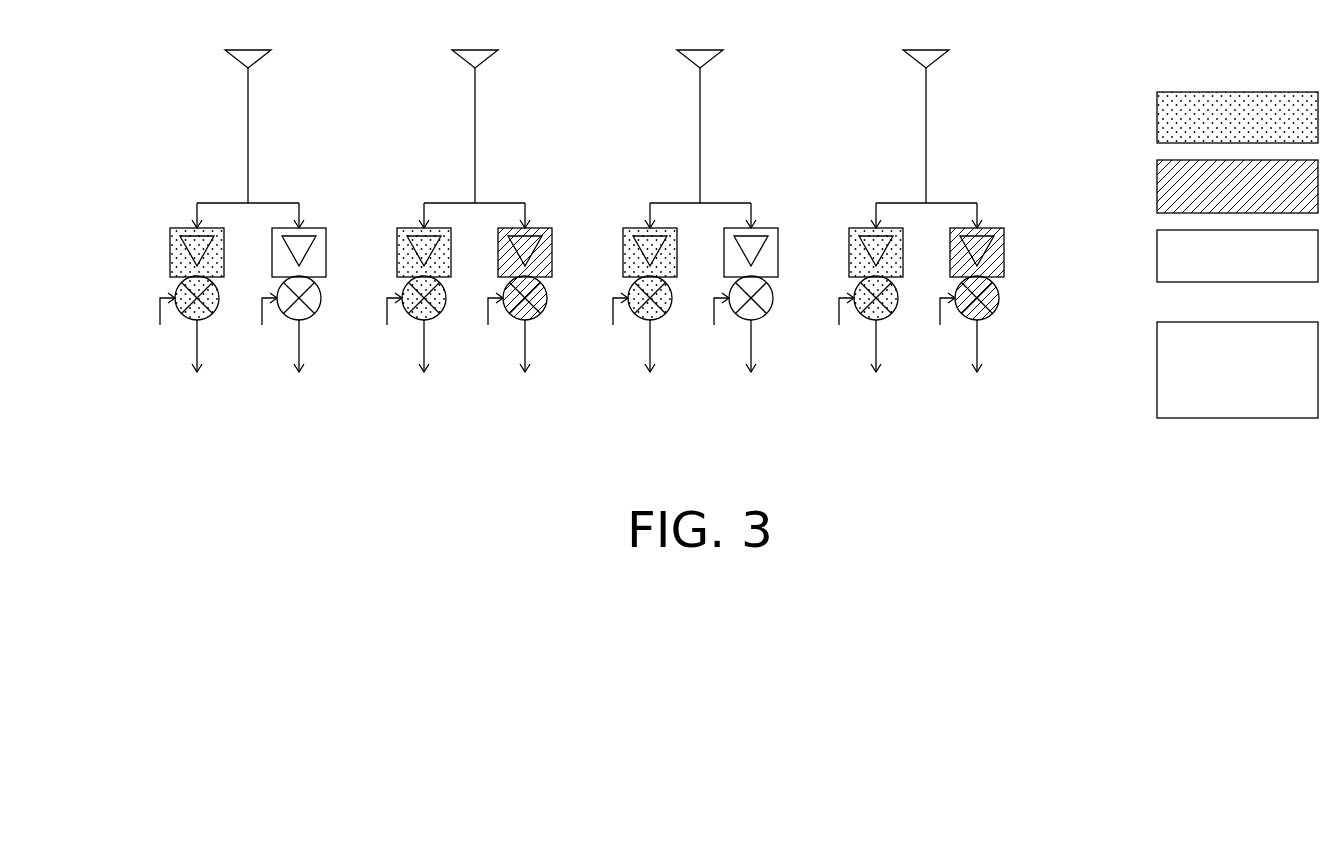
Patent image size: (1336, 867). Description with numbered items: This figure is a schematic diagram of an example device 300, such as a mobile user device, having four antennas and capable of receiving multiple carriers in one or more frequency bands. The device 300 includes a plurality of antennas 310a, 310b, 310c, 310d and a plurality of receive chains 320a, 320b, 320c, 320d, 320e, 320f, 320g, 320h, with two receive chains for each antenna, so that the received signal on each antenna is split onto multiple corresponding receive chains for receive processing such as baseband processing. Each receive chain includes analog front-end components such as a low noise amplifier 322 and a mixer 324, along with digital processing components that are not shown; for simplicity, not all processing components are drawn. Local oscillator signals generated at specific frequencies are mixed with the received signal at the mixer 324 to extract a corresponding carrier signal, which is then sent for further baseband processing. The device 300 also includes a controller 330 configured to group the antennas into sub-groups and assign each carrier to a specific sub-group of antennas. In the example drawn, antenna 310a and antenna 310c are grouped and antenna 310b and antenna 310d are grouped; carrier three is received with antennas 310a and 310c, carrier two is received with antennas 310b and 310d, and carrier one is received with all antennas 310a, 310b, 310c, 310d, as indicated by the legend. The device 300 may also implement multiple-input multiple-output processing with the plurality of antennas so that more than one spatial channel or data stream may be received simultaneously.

The device 300 is at (1213, 48).
The antenna 310a is at (261, 57).
The antenna 310b is at (488, 57).
The antenna 310c is at (713, 57).
The antenna 310d is at (939, 57).
The receive chain 320a is at (186, 206).
The receive chain 320b is at (297, 207).
The receive chain 320c is at (414, 207).
The receive chain 320d is at (522, 207).
The receive chain 320e is at (640, 207).
The receive chain 320f is at (752, 207).
The receive chain 320g is at (872, 207).
The receive chain 320h is at (986, 209).
The low noise amplifier 322 is at (178, 227).
The mixer 324 is at (180, 288).
The controller 330 is at (1211, 404).